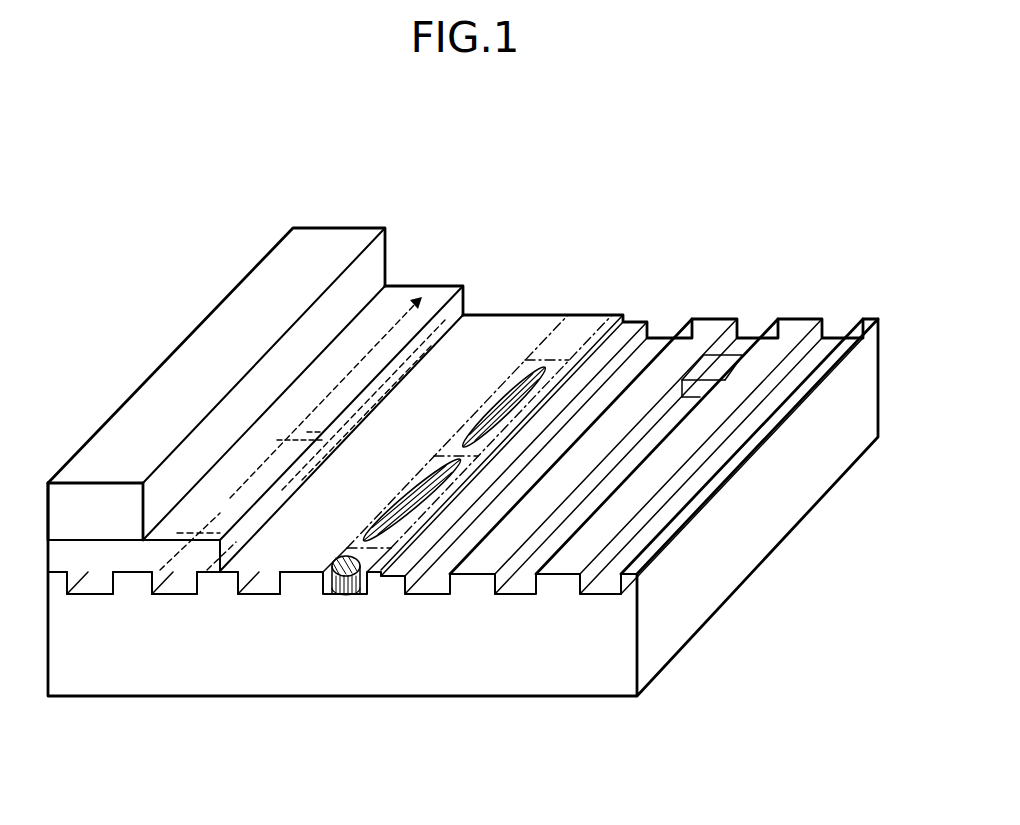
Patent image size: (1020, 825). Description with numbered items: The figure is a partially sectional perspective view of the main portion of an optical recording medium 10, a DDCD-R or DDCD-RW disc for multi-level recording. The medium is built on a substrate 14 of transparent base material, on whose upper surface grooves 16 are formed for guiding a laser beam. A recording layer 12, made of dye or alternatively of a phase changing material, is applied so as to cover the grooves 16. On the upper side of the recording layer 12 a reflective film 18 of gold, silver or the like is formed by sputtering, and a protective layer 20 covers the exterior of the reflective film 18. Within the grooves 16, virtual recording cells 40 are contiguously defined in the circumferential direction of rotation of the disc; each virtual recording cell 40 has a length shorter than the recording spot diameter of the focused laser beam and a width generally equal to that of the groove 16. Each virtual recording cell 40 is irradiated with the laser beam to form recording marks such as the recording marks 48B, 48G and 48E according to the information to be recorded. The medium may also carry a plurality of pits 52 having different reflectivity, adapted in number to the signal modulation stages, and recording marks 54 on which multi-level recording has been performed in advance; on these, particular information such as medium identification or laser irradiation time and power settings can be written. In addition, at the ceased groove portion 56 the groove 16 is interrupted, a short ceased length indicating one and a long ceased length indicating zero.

The optical recording medium 10 is at (103, 221).
The recording layer 12 is at (265, 586).
The substrate 14 is at (738, 554).
The grooves 16 is at (663, 337).
The reflective film 18 is at (461, 308).
The protective layer 20 is at (377, 266).
The virtual recording cell 40 is at (578, 328).
The recording mark 48B is at (500, 417).
The recording mark 48G is at (413, 507).
The recording mark 48E is at (340, 558).
The pits 52 is at (215, 533).
The recording marks 54 is at (341, 390).
The ceased groove portion 56 is at (718, 365).